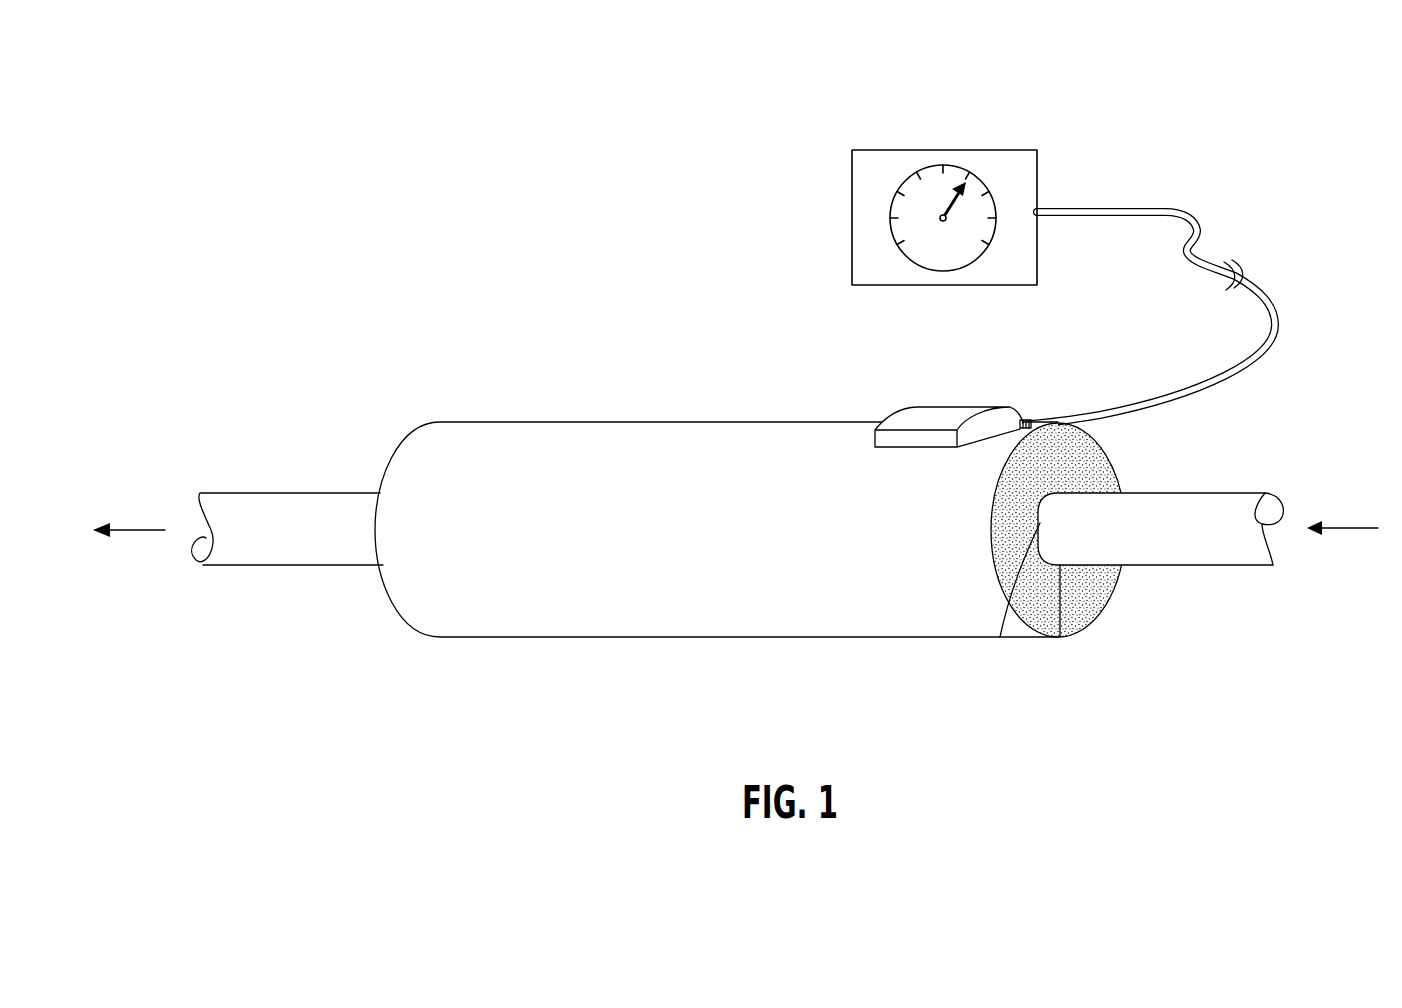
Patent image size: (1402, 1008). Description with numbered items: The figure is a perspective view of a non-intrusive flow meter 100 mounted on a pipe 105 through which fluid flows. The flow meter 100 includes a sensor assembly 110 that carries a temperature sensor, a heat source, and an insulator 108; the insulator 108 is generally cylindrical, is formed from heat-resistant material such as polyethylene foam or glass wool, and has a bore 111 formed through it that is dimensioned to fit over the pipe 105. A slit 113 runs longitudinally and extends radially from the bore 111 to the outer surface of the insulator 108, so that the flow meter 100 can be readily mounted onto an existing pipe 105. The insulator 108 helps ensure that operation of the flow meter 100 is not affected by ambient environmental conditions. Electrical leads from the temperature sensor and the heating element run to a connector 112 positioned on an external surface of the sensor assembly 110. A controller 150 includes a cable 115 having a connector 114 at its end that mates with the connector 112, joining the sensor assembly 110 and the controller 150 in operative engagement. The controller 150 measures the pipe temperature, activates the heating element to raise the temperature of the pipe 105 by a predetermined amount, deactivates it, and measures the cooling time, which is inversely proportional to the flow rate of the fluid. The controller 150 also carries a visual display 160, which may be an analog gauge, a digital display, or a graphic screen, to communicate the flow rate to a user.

The flow meter 100 is at (308, 180).
The pipe 105 is at (1230, 492).
The insulator 108 is at (1107, 468).
The sensor assembly 110 is at (490, 420).
The bore 111 is at (1000, 637).
The connector 112 is at (942, 405).
The slit 113 is at (1063, 618).
The connector 114 is at (1018, 405).
The cable 115 is at (1277, 316).
The controller 150 is at (851, 207).
The visual display 160 is at (931, 165).